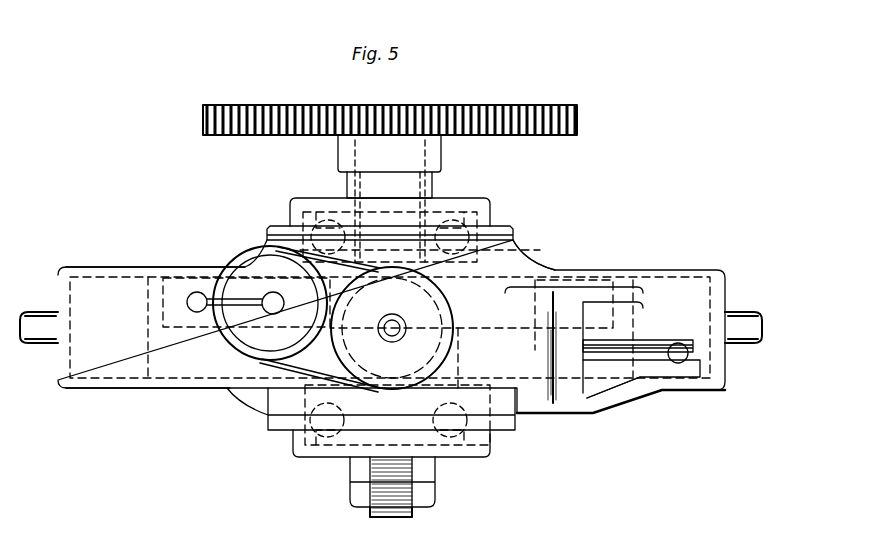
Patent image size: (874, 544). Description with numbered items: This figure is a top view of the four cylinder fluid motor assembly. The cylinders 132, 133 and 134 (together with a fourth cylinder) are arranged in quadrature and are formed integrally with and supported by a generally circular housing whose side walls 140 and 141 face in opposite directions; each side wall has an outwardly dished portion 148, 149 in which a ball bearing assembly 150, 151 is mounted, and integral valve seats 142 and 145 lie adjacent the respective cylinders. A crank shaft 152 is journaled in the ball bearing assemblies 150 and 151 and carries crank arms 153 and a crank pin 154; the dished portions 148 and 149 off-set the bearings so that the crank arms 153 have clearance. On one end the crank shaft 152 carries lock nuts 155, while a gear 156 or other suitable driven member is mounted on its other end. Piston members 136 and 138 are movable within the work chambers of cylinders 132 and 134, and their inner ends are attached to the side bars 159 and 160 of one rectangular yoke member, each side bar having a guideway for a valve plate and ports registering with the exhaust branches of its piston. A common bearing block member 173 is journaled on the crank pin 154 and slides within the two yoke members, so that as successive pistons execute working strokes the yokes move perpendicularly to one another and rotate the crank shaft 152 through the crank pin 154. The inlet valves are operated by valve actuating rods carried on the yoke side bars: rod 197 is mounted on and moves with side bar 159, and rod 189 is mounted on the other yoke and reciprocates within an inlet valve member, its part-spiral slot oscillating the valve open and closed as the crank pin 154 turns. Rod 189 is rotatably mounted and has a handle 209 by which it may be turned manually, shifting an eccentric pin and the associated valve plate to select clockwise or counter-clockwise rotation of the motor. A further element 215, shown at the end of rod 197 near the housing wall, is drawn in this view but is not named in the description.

The cylinder 132 is at (676, 270).
The cylinder 134 is at (102, 268).
The piston member 138 is at (178, 386).
The gear 156 is at (527, 108).
The crank shaft 152 is at (350, 208).
The ball bearing assembly 150 is at (482, 200).
The bearing block member 173 is at (290, 246).
The dished portion 148 is at (503, 240).
The side wall 140 is at (530, 275).
The valve seat 142 is at (591, 300).
The valve actuating rod 197 is at (655, 347).
The pin 215 is at (690, 358).
The piston member 136 is at (658, 394).
The side bar 159 is at (600, 404).
The dished portion 149 is at (560, 402).
The side wall 141 is at (537, 405).
The valve seat 145 is at (236, 258).
The valve actuating rod 189 is at (266, 311).
The handle 209 is at (196, 292).
The cylinder 133 is at (300, 422).
The side bar 160 is at (295, 428).
The crank pin 154 is at (492, 428).
The ball bearing assembly 151 is at (318, 455).
The crank arms 153 is at (455, 447).
The lock nuts 155 is at (430, 485).